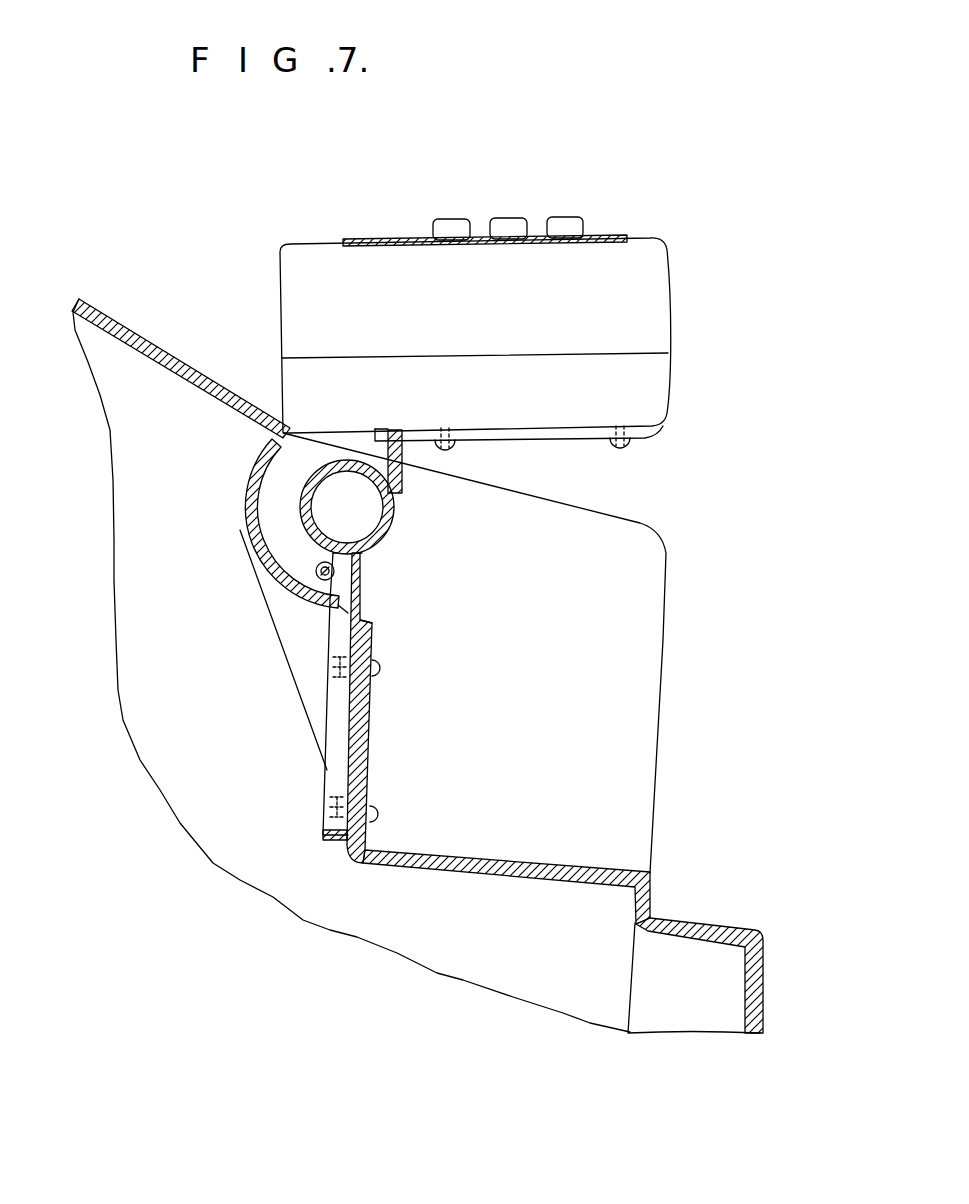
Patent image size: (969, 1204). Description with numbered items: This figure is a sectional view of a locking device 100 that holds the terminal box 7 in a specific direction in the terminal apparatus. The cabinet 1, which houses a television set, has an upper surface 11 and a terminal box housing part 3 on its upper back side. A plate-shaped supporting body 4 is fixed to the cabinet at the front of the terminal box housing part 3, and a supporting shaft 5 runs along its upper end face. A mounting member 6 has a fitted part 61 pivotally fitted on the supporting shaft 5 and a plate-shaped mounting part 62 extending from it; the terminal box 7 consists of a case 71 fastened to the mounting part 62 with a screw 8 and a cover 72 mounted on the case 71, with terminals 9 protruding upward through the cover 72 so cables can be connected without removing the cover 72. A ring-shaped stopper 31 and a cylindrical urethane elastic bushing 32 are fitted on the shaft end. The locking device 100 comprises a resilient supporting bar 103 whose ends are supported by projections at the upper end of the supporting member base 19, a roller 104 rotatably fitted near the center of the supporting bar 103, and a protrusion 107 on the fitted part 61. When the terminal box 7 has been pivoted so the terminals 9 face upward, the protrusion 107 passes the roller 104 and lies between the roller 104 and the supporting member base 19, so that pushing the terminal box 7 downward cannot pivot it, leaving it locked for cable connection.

The cabinet 1 is at (765, 993).
The terminal box housing part 3 is at (620, 734).
The supporting body 4 is at (332, 705).
The supporting shaft 5 is at (330, 512).
The mounting member 6 is at (395, 487).
The terminal box 7 is at (672, 342).
The screw 8 is at (455, 452).
The terminals 9 is at (457, 219).
The upper surface 11 is at (176, 360).
The supporting member base 19 is at (380, 603).
The ring-shaped stopper 31 is at (375, 727).
The elastic bushing 32 is at (380, 668).
The fitted part 61 is at (385, 540).
The mounting part 62 is at (545, 440).
The case 71 is at (667, 403).
The cover 72 is at (662, 284).
The locking device 100 is at (320, 571).
The resilient supporting bar 103 is at (323, 597).
The roller 104 is at (298, 585).
The protrusion 107 is at (380, 573).